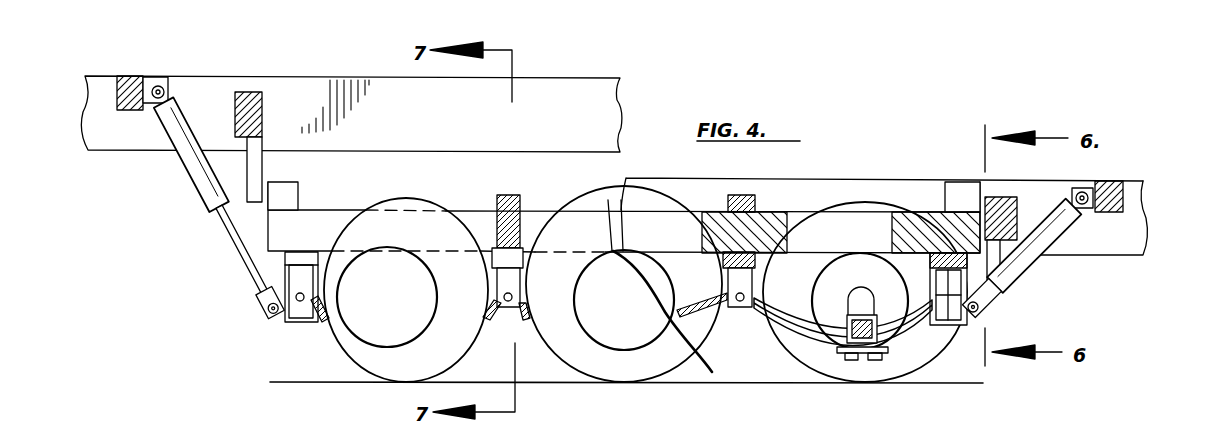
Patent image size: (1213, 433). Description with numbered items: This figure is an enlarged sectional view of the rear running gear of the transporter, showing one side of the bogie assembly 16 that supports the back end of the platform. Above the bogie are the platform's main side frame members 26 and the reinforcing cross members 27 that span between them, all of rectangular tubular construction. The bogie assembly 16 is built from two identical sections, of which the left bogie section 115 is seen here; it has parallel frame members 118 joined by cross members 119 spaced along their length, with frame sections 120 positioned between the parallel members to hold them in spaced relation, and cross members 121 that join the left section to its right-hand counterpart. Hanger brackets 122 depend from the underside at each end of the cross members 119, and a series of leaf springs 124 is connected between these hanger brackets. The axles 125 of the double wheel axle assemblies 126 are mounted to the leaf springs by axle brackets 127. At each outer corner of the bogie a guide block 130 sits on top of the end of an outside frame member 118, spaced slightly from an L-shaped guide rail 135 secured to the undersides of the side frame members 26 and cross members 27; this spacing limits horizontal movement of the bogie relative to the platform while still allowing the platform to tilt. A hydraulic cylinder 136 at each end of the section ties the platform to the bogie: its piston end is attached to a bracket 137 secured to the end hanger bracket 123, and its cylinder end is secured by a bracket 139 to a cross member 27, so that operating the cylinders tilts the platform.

The bogie assembly 16 is at (580, 203).
The main side frame member 26 is at (556, 78).
The reinforcing cross member 27 is at (135, 75).
The left bogie section 115 is at (488, 172).
The parallel frame member 118 is at (450, 210).
The cross member 119 is at (283, 258).
The frame section 120 is at (758, 225).
The cross member 121 is at (521, 205).
The hanger bracket 122 is at (306, 283).
The end hanger bracket 123 is at (287, 315).
The leaf spring 124 is at (323, 323).
The axle 125 is at (832, 347).
The double wheel axle assembly 126 is at (367, 360).
The axle bracket 127 is at (862, 353).
The guide block 130 is at (293, 185).
The guide rail 135 is at (272, 160).
The hydraulic cylinder 136 is at (197, 180).
The bracket 137 is at (283, 320).
The bracket 139 is at (158, 77).